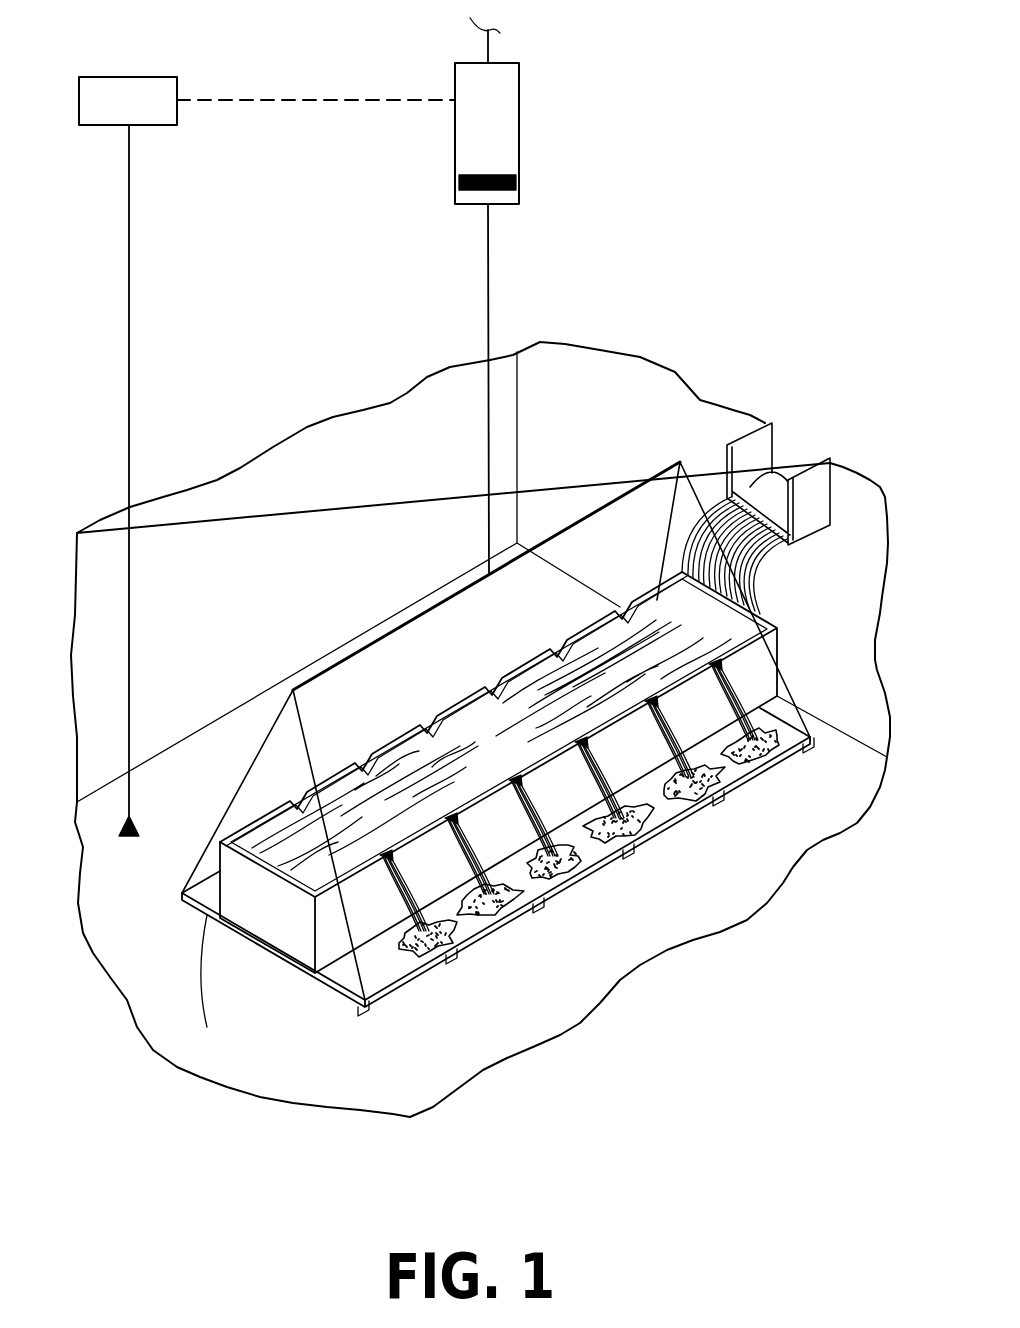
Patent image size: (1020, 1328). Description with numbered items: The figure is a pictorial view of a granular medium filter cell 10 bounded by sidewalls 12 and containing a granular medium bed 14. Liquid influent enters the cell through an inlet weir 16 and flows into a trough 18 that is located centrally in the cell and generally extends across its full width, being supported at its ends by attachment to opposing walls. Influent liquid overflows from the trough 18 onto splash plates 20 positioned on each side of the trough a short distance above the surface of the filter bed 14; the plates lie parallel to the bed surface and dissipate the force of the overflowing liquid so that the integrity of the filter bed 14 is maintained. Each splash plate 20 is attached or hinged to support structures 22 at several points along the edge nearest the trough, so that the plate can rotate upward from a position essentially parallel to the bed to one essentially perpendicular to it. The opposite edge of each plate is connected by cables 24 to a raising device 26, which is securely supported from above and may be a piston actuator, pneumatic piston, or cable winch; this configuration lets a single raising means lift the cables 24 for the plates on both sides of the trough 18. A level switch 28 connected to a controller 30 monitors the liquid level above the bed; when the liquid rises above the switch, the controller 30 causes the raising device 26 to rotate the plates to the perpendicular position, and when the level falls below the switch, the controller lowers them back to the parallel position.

The granular medium filter cell 10 is at (90, 1090).
The sidewalls 12 is at (102, 582).
The granular medium bed 14 is at (593, 945).
The inlet weir 16 is at (755, 448).
The trough 18 is at (748, 669).
The splash plates 20 is at (583, 850).
The support structures 22 is at (543, 900).
The cables 24 is at (492, 457).
The raising device 26 is at (519, 115).
The level switch 28 is at (141, 830).
The controller 30 is at (115, 83).